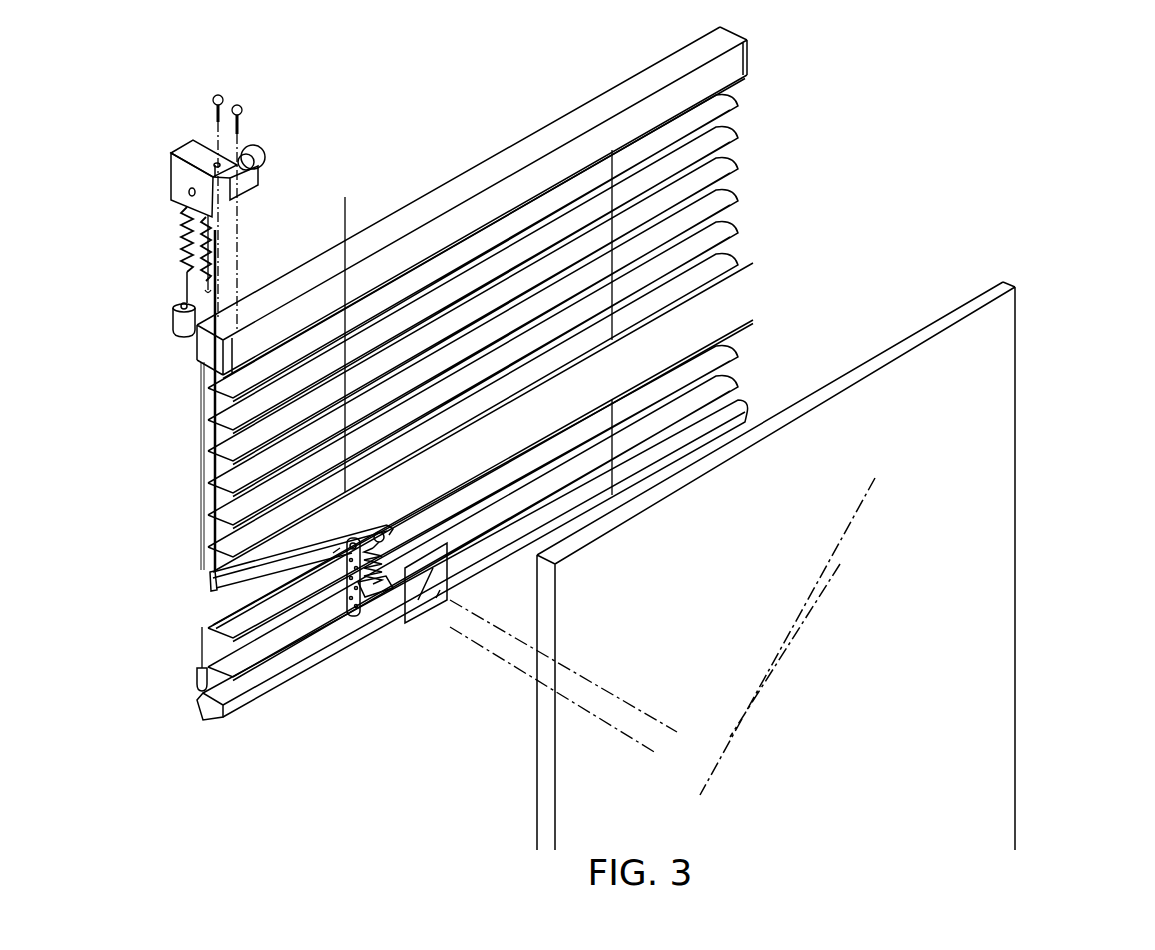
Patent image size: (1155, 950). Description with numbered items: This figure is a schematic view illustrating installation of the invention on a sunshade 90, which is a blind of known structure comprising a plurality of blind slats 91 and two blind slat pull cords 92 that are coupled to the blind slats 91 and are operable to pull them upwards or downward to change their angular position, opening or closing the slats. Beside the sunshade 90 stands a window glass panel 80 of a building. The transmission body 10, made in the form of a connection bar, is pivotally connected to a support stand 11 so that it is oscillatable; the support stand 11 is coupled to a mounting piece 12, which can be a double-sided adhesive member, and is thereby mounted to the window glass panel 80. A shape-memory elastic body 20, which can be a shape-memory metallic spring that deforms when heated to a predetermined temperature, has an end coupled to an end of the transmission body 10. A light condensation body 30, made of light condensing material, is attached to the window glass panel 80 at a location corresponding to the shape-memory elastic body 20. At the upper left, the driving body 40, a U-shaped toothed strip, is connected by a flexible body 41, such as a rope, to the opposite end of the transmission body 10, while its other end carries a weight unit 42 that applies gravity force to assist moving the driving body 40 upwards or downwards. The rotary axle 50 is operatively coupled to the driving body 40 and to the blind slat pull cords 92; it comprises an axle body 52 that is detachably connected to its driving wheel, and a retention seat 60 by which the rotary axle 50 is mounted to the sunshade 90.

The transmission body 10 is at (242, 578).
The support stand 11 is at (333, 553).
The mounting piece 12 is at (360, 613).
The shape-memory elastic body 20 is at (383, 603).
The light condensation body 30 is at (433, 598).
The driving body 40 is at (176, 229).
The flexible body 41 is at (213, 404).
The weight unit 42 is at (173, 322).
The rotary axle 50 is at (255, 127).
The axle body 52 is at (265, 157).
The retention seat 60 is at (185, 150).
The window glass panel 80 is at (1007, 477).
The sunshade 90 is at (757, 120).
The blind slats 91 is at (497, 237).
The blind slat pull cords 92 is at (346, 312).